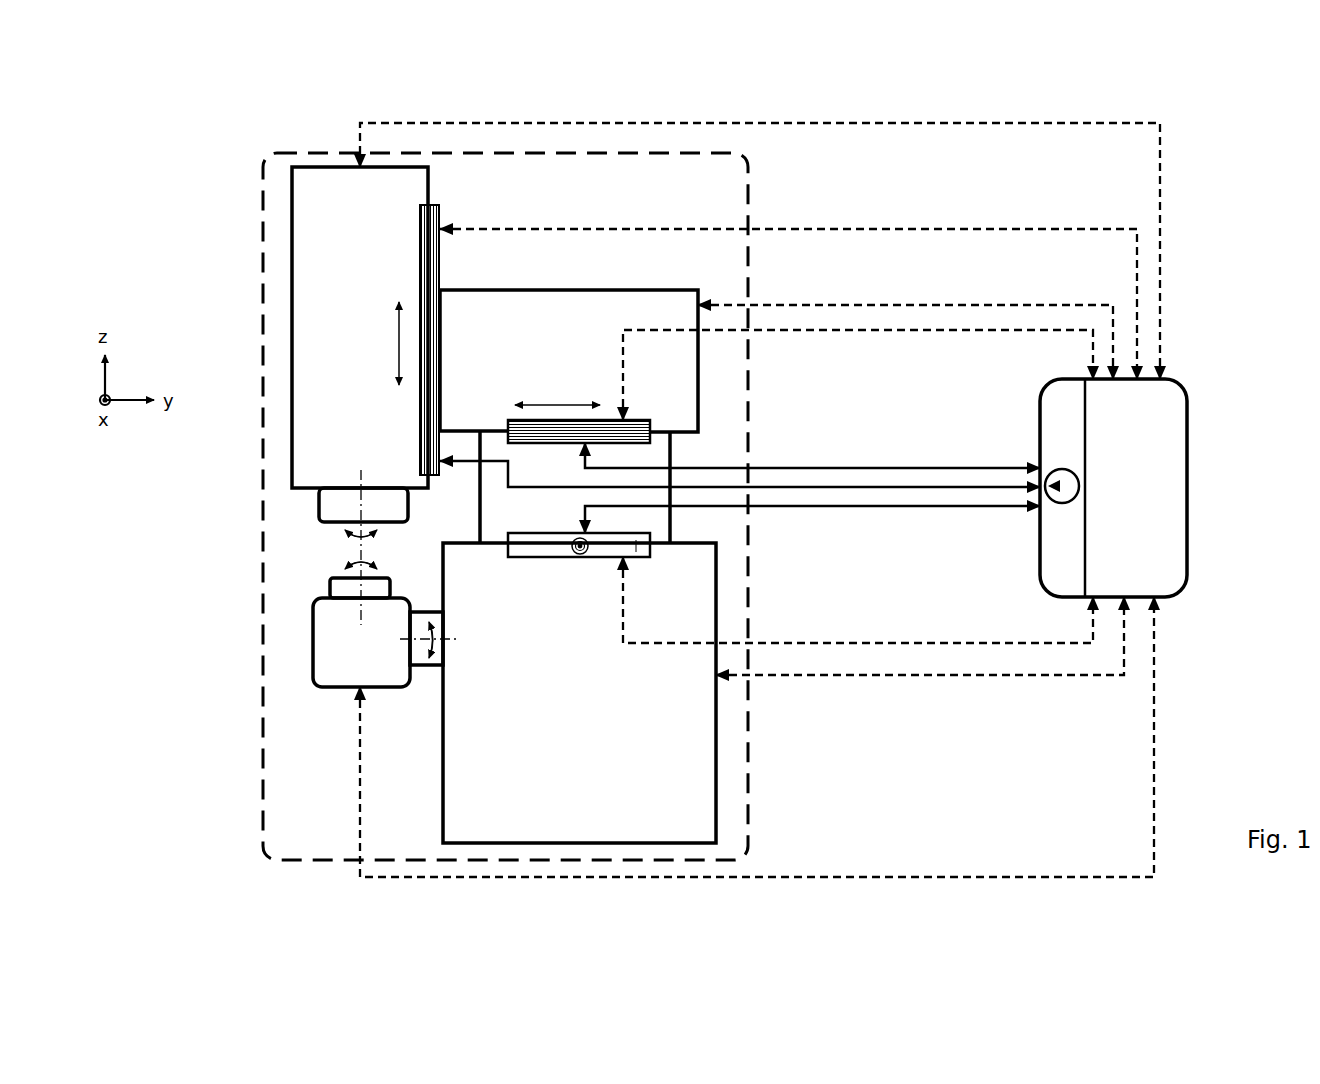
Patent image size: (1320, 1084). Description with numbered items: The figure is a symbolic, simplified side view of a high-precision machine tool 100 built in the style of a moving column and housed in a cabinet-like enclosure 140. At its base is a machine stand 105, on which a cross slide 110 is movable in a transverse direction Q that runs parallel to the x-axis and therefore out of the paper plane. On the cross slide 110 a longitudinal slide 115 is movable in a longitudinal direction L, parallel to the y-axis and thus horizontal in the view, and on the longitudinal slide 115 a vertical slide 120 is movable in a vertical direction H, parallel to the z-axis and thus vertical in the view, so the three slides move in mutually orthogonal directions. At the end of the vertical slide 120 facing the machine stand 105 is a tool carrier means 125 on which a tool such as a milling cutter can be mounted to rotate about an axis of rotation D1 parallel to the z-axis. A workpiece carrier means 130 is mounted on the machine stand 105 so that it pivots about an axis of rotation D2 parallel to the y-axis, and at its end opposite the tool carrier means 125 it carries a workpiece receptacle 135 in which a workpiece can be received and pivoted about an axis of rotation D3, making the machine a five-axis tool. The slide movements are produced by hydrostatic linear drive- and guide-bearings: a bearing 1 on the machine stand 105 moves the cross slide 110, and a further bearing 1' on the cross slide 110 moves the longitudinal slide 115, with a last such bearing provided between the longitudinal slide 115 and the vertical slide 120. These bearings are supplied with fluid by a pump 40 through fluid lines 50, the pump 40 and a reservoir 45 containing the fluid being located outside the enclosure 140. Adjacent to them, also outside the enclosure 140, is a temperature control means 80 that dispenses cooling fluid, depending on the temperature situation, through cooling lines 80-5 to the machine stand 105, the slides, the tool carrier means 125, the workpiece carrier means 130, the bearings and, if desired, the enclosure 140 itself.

The high-precision machine tool 100 is at (295, 757).
The enclosure 140 is at (262, 300).
The vertical slide 120 is at (315, 238).
The vertical direction H is at (397, 342).
The longitudinal slide 115 is at (680, 360).
The longitudinal direction L is at (560, 400).
The further linear drive- and guide-bearing 1' is at (676, 421).
The tool carrier means 125 is at (335, 495).
The axis of rotation D1 is at (360, 510).
The axis of rotation D3 is at (360, 603).
The workpiece receptacle 135 is at (345, 590).
The workpiece carrier means 130 is at (330, 668).
The axis of rotation D2 is at (415, 634).
The machine stand 105 is at (693, 790).
The cross slide 110 is at (660, 527).
The linear drive- and guide-bearing 1 is at (735, 567).
The transverse direction Q is at (578, 556).
The fluid lines 50 is at (972, 505).
The temperature control means 80 is at (1150, 430).
The reservoir 45 is at (1068, 537).
The pump 40 is at (1067, 490).
The cooling lines 80-5 is at (1093, 350).